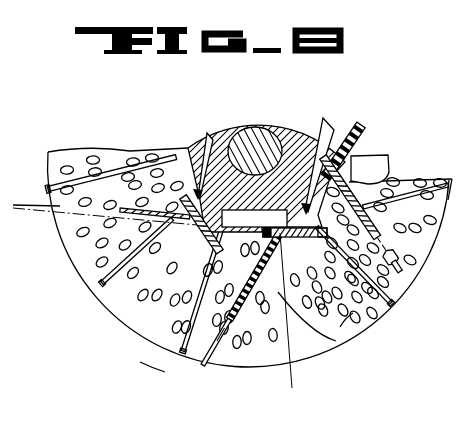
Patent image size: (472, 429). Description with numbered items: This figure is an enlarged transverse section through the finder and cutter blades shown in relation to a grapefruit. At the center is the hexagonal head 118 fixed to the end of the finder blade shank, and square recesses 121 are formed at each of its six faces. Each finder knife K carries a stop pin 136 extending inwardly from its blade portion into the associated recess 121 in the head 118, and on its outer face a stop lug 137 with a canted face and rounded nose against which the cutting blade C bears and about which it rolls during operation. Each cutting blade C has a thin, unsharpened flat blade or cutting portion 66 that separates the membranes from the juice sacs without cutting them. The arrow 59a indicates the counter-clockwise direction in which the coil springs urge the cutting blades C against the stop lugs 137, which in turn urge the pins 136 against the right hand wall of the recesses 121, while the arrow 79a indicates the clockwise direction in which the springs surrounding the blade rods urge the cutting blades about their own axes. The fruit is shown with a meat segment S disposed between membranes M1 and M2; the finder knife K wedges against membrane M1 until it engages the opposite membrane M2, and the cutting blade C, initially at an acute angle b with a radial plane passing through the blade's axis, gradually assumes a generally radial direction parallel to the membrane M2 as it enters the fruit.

The flat blade or cutting portion 66 is at (133, 214).
The hexagonal head 118 is at (308, 143).
The square recesses 121 is at (183, 162).
The stop lug 137 is at (364, 148).
The stop pin 136 is at (281, 224).
The finder knife K is at (342, 133).
The cutting blade C is at (374, 197).
The membrane M1 is at (393, 303).
The membrane M2 is at (292, 334).
The meat segment S is at (353, 313).
The arrow 59a is at (336, 341).
The arrow 79a is at (175, 392).
The acute angle b is at (286, 383).